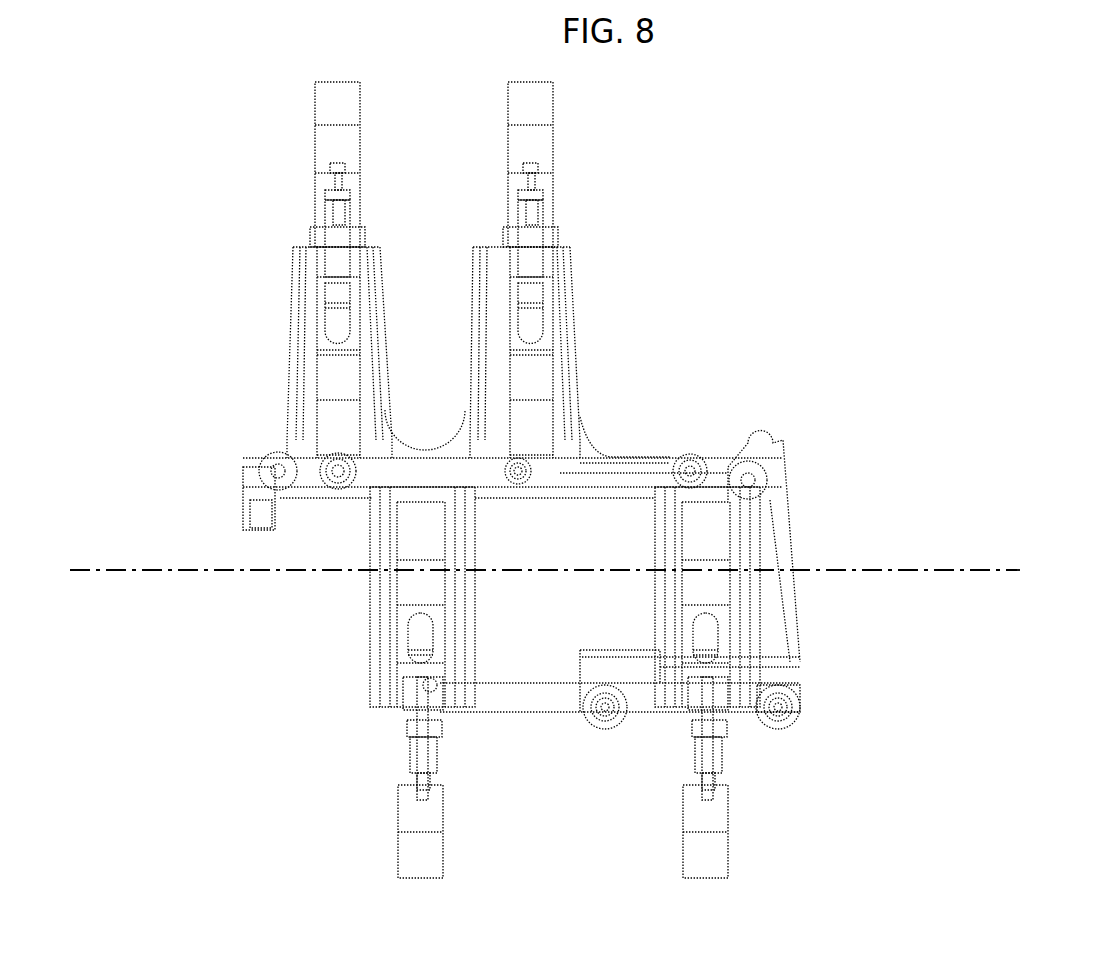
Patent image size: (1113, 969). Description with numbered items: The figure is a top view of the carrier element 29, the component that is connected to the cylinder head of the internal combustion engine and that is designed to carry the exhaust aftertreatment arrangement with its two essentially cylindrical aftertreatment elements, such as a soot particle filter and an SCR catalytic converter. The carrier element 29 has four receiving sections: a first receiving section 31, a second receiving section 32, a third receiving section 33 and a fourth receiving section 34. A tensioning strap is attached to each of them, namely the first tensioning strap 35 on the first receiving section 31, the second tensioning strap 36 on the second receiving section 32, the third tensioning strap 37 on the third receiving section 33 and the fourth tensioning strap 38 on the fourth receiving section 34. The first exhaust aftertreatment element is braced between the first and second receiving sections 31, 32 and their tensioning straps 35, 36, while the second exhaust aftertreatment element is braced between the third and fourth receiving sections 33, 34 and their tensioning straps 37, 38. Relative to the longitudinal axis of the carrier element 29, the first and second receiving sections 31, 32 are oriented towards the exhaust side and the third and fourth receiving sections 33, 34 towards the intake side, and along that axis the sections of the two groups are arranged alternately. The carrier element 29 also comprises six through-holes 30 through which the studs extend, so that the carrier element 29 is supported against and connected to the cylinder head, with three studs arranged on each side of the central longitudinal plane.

The carrier element 29 is at (868, 412).
The through-holes 30 is at (688, 468).
The first receiving section 31 is at (378, 598).
The second receiving section 32 is at (747, 655).
The third receiving section 33 is at (307, 375).
The fourth receiving section 34 is at (575, 384).
The first tensioning strap 35 is at (428, 848).
The second tensioning strap 36 is at (706, 862).
The third tensioning strap 37 is at (333, 98).
The fourth tensioning strap 38 is at (540, 97).